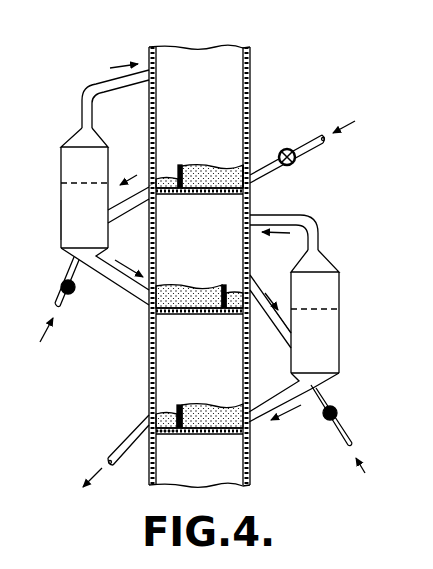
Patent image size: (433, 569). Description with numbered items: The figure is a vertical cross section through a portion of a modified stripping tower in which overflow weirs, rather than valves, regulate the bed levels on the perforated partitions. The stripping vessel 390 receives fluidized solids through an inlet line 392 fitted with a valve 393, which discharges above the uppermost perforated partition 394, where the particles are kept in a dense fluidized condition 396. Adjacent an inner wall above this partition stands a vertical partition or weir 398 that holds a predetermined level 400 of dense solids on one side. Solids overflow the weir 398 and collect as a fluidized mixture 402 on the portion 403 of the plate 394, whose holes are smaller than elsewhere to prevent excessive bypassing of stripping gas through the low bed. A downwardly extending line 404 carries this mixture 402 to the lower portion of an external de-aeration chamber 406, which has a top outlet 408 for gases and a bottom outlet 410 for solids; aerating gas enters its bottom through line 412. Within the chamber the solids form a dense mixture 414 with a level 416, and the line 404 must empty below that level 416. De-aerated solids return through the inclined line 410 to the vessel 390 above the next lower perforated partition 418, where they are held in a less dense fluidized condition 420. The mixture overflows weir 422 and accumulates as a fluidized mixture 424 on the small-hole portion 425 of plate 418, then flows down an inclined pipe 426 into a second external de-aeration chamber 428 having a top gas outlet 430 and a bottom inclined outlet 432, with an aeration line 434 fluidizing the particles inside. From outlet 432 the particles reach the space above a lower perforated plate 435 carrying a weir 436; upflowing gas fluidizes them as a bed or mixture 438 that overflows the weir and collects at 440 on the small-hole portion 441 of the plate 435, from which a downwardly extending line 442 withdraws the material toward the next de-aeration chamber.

The stripping vessel 390 is at (251, 104).
The inlet line 392 is at (312, 134).
The valve 393 is at (296, 160).
The perforated partition 394 is at (251, 199).
The dense fluidized condition 396 is at (245, 167).
The vertical partition or weir 398 is at (178, 165).
The predetermined level 400 is at (219, 166).
The fluidized mixture 402 is at (151, 183).
The portion of plate 403 is at (164, 194).
The downwardly extending line 404 is at (131, 209).
The external de-aeration chamber 406 is at (72, 140).
The top outlet 408 is at (97, 85).
The bottom outlet 410 is at (126, 288).
The aerating gas line 412 is at (68, 303).
The dense mixture 414 is at (74, 218).
The level 416 is at (73, 183).
The perforated partition 418 is at (166, 315).
The less dense fluidized condition 420 is at (173, 290).
The weir 422 is at (216, 290).
The fluidized mixture 424 is at (254, 285).
The portion of plate 425 is at (228, 318).
The inclined pipe 426 is at (274, 326).
The external de-aeration chamber 428 is at (340, 284).
The top outlet 430 is at (310, 222).
The bottom inclined outlet 432 is at (263, 422).
The aeration line 434 is at (318, 398).
The perforated plate 435 is at (222, 437).
The weir 436 is at (158, 400).
The bed or mixture 438 is at (222, 412).
The accumulated fluidized material 440 is at (177, 412).
The portion of plate 441 is at (166, 434).
The downwardly extending line 442 is at (118, 450).